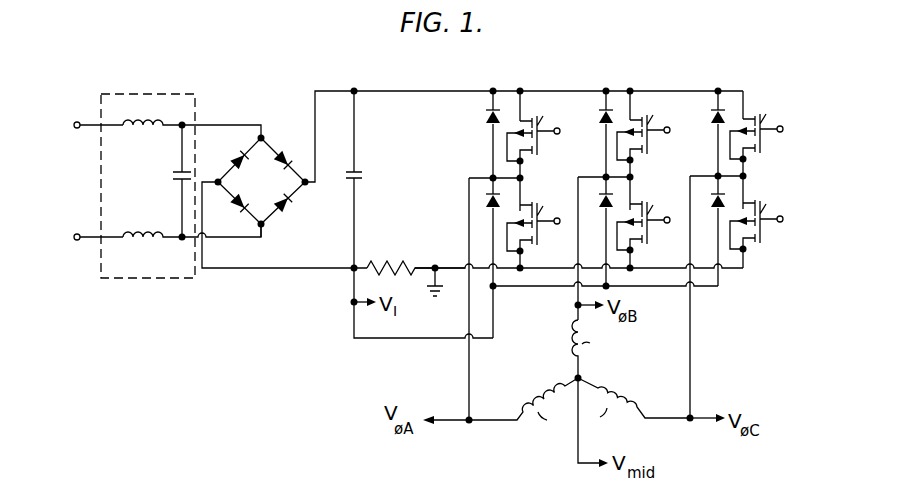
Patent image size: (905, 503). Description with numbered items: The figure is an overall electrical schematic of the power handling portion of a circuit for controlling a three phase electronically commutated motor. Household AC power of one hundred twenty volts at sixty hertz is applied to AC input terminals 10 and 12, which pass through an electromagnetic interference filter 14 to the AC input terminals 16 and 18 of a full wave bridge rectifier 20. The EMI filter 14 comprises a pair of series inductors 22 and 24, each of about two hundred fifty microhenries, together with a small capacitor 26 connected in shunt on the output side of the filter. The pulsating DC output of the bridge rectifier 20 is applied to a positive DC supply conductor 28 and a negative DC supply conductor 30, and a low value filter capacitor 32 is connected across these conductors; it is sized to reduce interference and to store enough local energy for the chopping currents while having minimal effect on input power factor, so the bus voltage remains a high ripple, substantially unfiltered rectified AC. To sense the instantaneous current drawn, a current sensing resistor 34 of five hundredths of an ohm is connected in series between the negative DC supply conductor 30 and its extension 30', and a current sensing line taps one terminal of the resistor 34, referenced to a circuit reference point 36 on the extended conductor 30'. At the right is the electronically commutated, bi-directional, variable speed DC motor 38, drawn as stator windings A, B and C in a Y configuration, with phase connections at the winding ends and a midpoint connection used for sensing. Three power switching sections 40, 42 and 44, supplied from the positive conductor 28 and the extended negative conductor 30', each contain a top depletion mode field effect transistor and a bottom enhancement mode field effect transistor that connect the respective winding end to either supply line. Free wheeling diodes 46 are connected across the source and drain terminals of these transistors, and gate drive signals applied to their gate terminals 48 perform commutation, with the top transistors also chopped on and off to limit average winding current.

The AC input terminal 10 is at (74, 129).
The AC input terminal 12 is at (74, 241).
The electromagnetic interference (EMI) filter 14 is at (165, 280).
The AC input terminal of bridge rectifier 16 is at (262, 137).
The AC input terminal of bridge rectifier 18 is at (266, 226).
The full wave bridge rectifier 20 is at (225, 113).
The series inductor 22 is at (147, 128).
The series inductor 24 is at (163, 229).
The capacitor 26 is at (175, 177).
The positive DC supply conductor 28 is at (428, 89).
The negative DC supply conductor 30 is at (472, 249).
The extension of negative DC supply conductor 30' is at (439, 251).
The filter capacitor 32 is at (352, 183).
The current sensing resistor 34 is at (389, 264).
The circuit reference point 36 is at (432, 299).
The electronically commutated DC motor 38 is at (634, 370).
The power switching section 40 is at (529, 80).
The power switching section 42 is at (636, 80).
The power switching section 44 is at (749, 78).
The free wheeling diode 46 is at (486, 118).
The gate terminal 48 is at (558, 135).